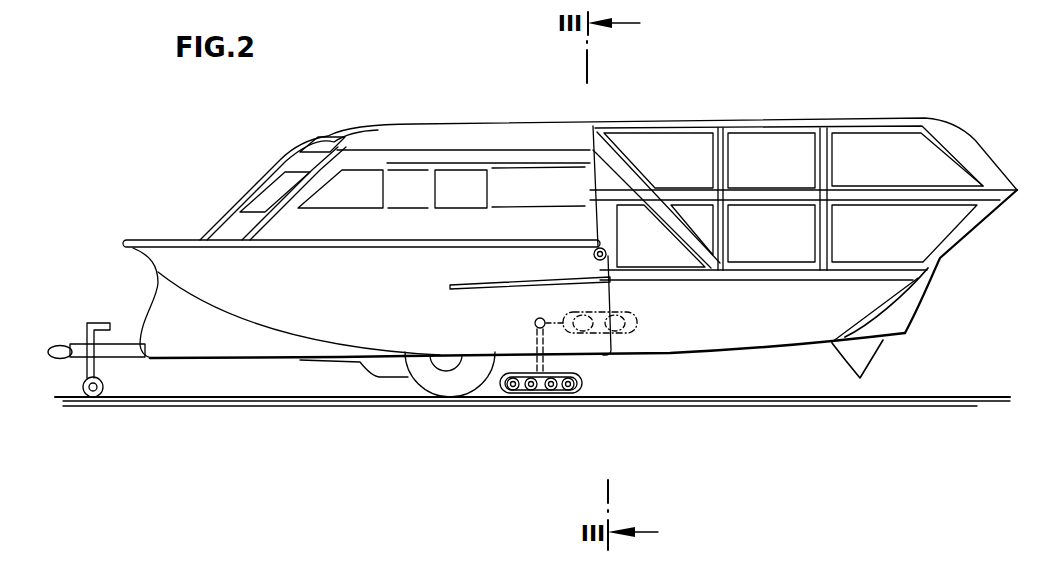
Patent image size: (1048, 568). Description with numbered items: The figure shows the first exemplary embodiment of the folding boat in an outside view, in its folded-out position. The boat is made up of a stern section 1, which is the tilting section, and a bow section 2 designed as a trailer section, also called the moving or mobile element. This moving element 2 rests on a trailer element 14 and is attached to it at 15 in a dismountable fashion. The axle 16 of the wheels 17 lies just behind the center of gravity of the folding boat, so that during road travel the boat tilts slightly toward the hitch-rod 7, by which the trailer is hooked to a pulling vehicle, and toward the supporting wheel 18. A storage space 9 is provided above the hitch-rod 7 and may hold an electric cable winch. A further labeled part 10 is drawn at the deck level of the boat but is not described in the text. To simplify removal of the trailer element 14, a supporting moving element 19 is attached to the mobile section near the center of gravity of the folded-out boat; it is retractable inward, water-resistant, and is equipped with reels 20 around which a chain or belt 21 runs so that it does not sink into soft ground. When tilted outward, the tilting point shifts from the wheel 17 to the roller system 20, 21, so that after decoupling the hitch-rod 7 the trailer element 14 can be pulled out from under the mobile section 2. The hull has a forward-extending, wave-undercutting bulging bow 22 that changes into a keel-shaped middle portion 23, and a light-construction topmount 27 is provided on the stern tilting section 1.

The stern section 1 is at (808, 325).
The bow section 2 is at (381, 383).
The hitch-rod 7 is at (118, 352).
The storage space 9 is at (177, 257).
The railing pivot 10 is at (594, 251).
The trailer element 14 is at (362, 370).
The dismountable attachment 15 is at (140, 353).
The supporting wheel 18 is at (90, 400).
The axle 16 is at (450, 360).
The wheels 17 is at (433, 383).
The supporting moving element 19 is at (545, 361).
The reels 20 is at (578, 392).
The chain or belt 21 is at (545, 395).
The bow 22 is at (146, 316).
The keel-shaped middle portion 23 is at (308, 348).
The topmount 27 is at (718, 133).